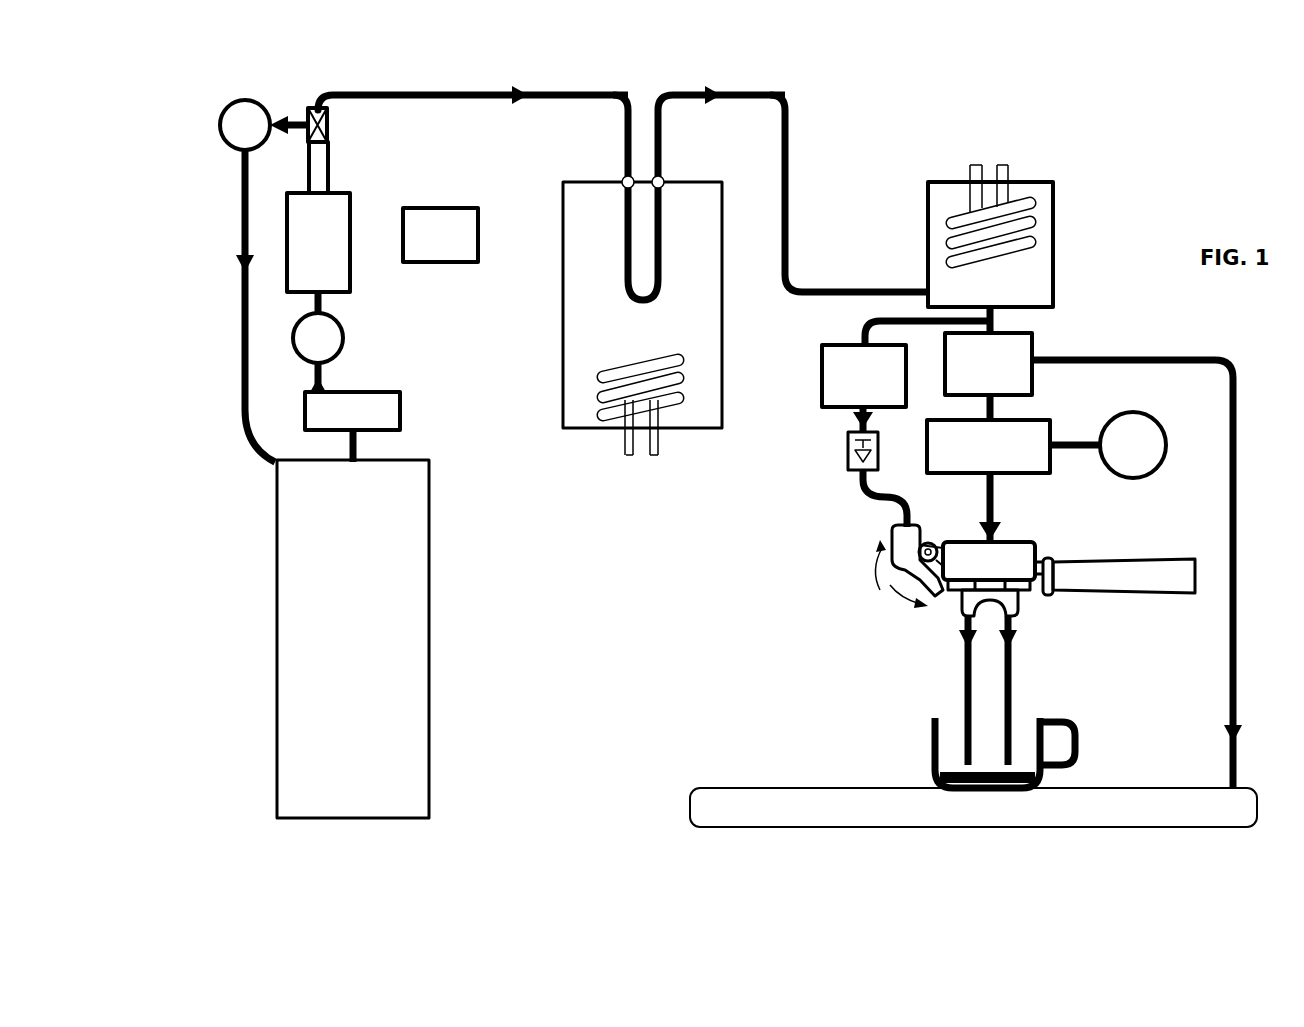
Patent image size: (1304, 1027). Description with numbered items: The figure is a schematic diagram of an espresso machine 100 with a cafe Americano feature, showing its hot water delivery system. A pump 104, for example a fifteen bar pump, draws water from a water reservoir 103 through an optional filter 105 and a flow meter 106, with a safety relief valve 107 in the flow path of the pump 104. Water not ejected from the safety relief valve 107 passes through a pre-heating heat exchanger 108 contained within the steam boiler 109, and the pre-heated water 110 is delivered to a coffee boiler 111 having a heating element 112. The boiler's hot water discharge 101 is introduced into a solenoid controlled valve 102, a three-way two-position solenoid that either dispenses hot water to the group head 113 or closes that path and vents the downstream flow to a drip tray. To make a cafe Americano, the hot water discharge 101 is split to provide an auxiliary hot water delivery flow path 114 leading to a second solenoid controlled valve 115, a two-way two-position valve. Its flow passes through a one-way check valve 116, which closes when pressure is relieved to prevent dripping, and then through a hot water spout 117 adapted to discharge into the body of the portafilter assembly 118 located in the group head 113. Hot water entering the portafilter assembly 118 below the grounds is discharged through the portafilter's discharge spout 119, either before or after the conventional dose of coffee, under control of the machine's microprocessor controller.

The espresso machine 100 is at (1210, 93).
The supply of hot water 101 is at (1040, 322).
The solenoid controlled valve 102 is at (1018, 382).
The water reservoir 103 is at (410, 650).
The pump 104 is at (290, 220).
The filter 105 is at (318, 398).
The flow meter 106 is at (310, 340).
The safety relief valve 107 is at (312, 108).
The pre-heating heat exchanger 108 is at (662, 228).
The steam boiler 109 is at (686, 322).
The pre-heated water 110 is at (840, 290).
The coffee boiler 111 is at (1042, 200).
The heating element 112 is at (1015, 188).
The group head 113 is at (1030, 460).
The auxiliary hot water delivery flow path 114 is at (870, 322).
The second solenoid controlled valve 115 is at (825, 380).
The check valve 116 is at (845, 455).
The hot water spout 117 is at (905, 542).
The portafilter assembly 118 is at (1015, 553).
The discharge spout of the portafilter assembly 119 is at (1020, 600).